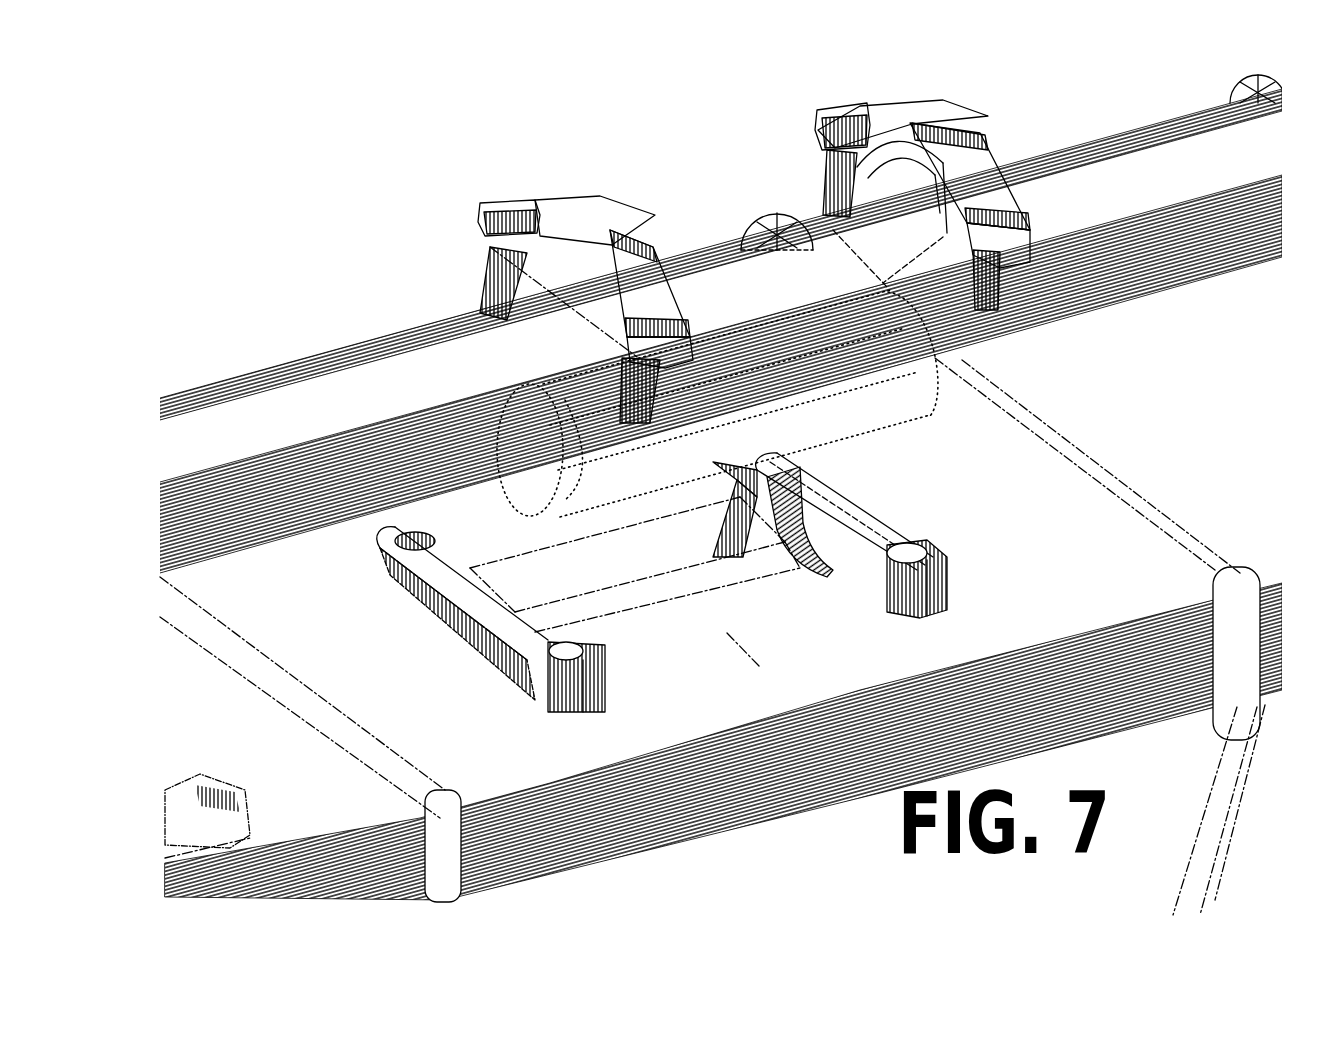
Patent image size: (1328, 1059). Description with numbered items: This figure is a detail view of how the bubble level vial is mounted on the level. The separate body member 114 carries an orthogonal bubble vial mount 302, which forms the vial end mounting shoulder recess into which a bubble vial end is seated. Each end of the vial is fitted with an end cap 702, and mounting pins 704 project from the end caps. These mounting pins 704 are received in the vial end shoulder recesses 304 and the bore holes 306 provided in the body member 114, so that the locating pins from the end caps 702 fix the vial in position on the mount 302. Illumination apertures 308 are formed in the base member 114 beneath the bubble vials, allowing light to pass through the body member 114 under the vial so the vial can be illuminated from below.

The body member 114 is at (455, 690).
The bubble vial mount 302 is at (808, 546).
The vial end shoulder recess 304 is at (390, 533).
The bore hole 306 is at (583, 655).
The illumination aperture 308 is at (737, 588).
The end cap 702 is at (643, 223).
The mounting pin 704 is at (484, 250).